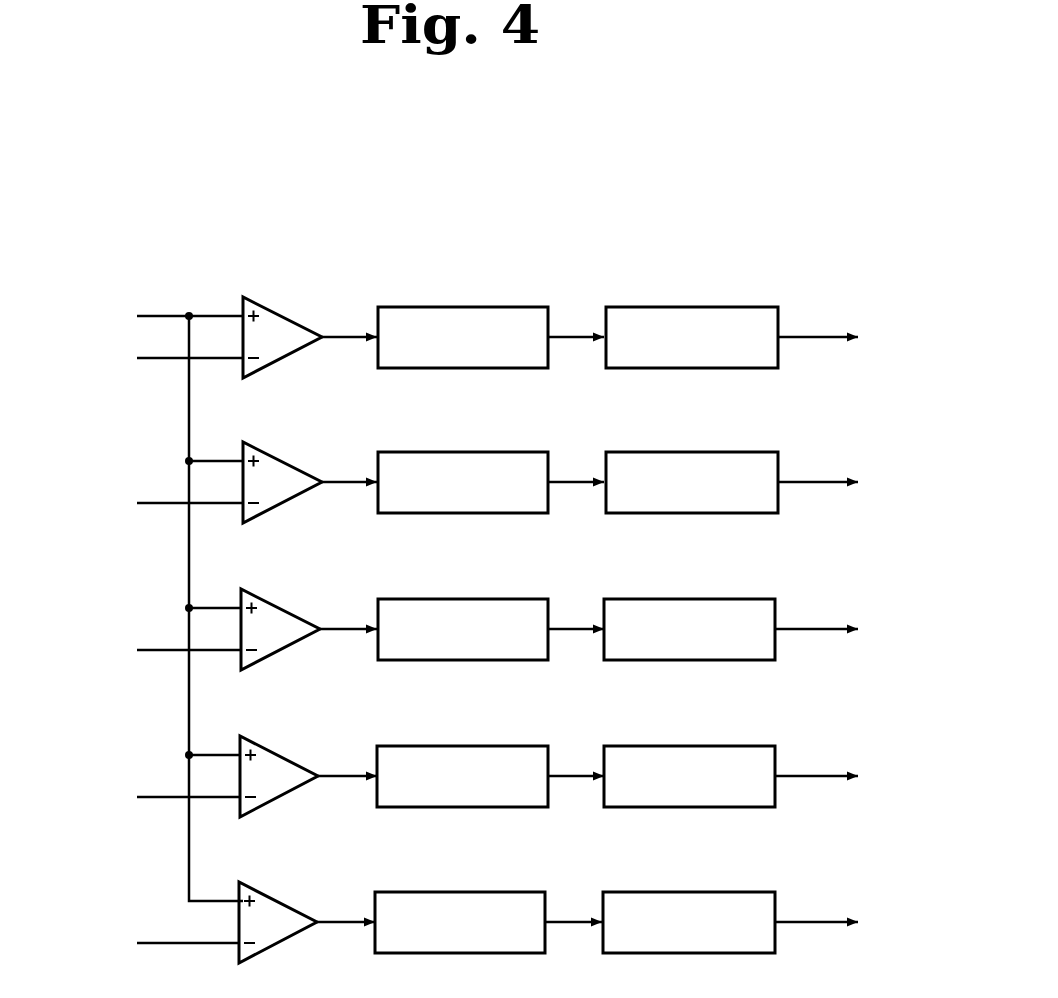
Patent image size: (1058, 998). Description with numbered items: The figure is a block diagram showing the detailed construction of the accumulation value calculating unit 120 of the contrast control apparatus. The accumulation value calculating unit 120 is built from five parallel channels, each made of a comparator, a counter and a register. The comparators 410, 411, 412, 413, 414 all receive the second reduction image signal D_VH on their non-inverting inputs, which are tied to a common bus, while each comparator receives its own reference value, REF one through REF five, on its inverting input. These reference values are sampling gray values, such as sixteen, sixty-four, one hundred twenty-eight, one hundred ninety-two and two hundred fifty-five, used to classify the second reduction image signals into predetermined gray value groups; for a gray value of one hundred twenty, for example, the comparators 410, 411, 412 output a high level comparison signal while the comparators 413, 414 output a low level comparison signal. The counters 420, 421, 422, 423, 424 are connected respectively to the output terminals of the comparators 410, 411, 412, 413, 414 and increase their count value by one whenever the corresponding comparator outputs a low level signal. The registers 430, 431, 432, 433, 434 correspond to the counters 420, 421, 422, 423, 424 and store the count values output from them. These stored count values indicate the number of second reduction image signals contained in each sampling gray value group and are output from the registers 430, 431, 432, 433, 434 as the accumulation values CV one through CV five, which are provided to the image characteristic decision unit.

The accumulation value calculating unit 120 is at (891, 200).
The comparator 410 is at (285, 312).
The comparator 411 is at (285, 457).
The comparator 412 is at (283, 604).
The comparator 413 is at (283, 751).
The comparator 414 is at (282, 897).
The counter 420 is at (509, 306).
The counter 421 is at (509, 451).
The counter 422 is at (509, 598).
The counter 423 is at (509, 745).
The counter 424 is at (507, 891).
The register 430 is at (739, 306).
The register 431 is at (739, 451).
The register 432 is at (739, 598).
The register 433 is at (739, 745).
The register 434 is at (739, 891).